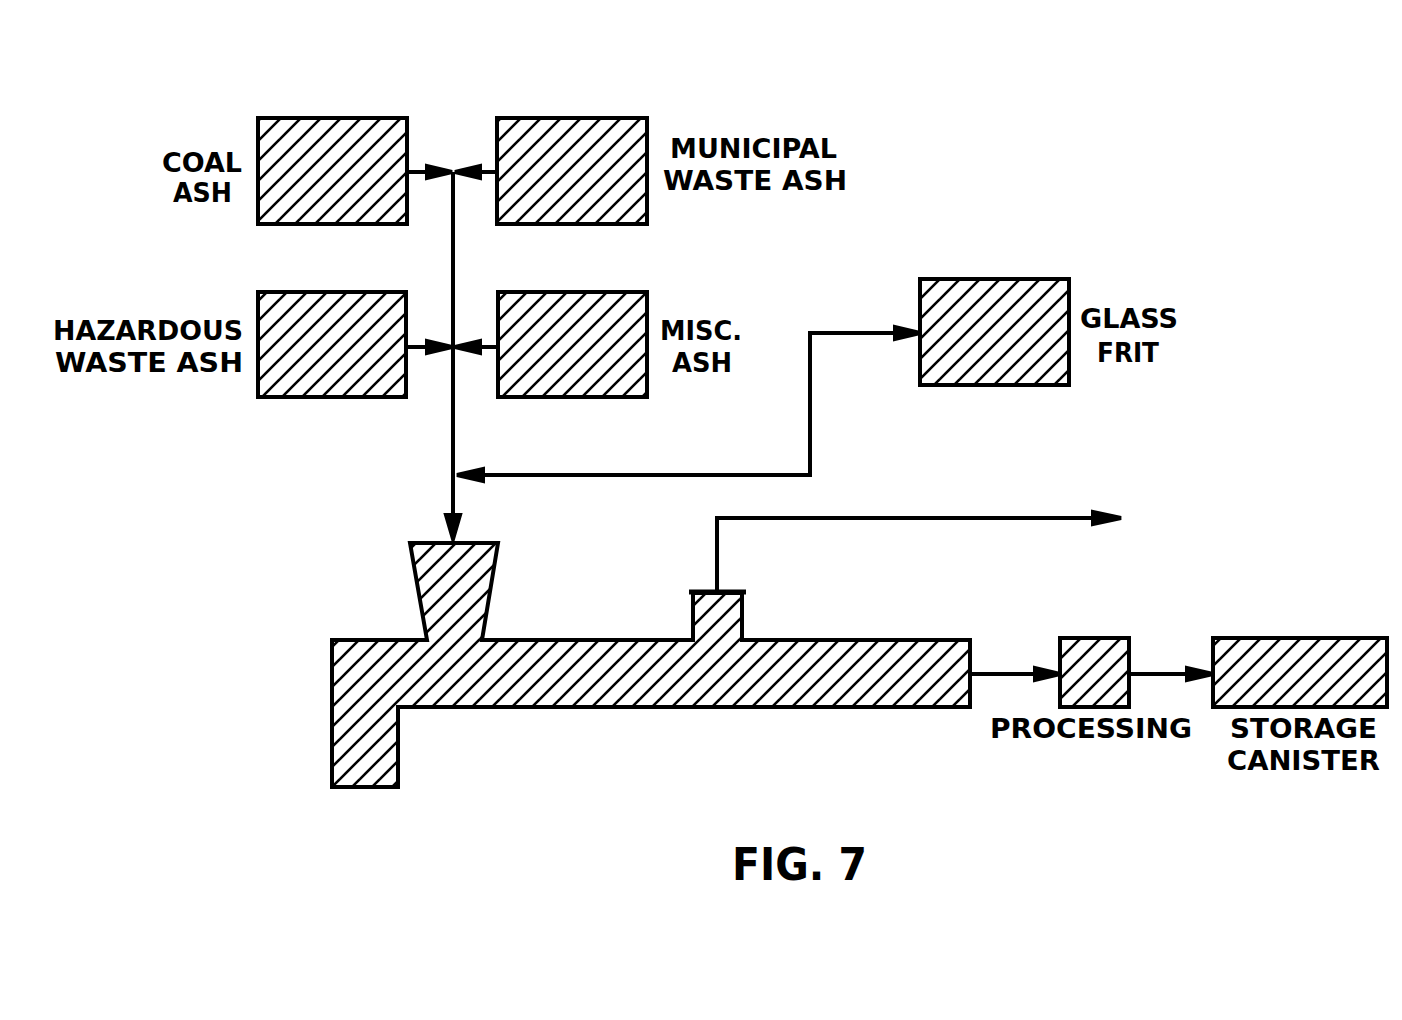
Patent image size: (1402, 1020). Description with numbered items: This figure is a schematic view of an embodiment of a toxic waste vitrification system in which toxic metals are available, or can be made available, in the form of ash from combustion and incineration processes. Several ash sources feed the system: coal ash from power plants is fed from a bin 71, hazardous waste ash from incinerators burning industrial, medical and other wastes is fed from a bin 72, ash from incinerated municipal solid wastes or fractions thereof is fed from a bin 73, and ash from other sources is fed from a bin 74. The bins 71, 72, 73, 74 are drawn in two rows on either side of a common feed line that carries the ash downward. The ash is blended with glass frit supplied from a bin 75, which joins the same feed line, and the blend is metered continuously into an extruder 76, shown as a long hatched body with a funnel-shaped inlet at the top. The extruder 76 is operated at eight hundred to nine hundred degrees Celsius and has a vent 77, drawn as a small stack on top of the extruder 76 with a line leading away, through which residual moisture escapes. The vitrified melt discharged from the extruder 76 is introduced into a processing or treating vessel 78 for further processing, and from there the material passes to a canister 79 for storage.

The bin 71 is at (337, 152).
The bin 72 is at (308, 363).
The bin 73 is at (573, 147).
The bin 74 is at (567, 373).
The bin 75 is at (1028, 310).
The extruder 76 is at (553, 685).
The vent 77 is at (730, 590).
The processing or treating vessel 78 is at (1110, 663).
The canister 79 is at (1315, 665).